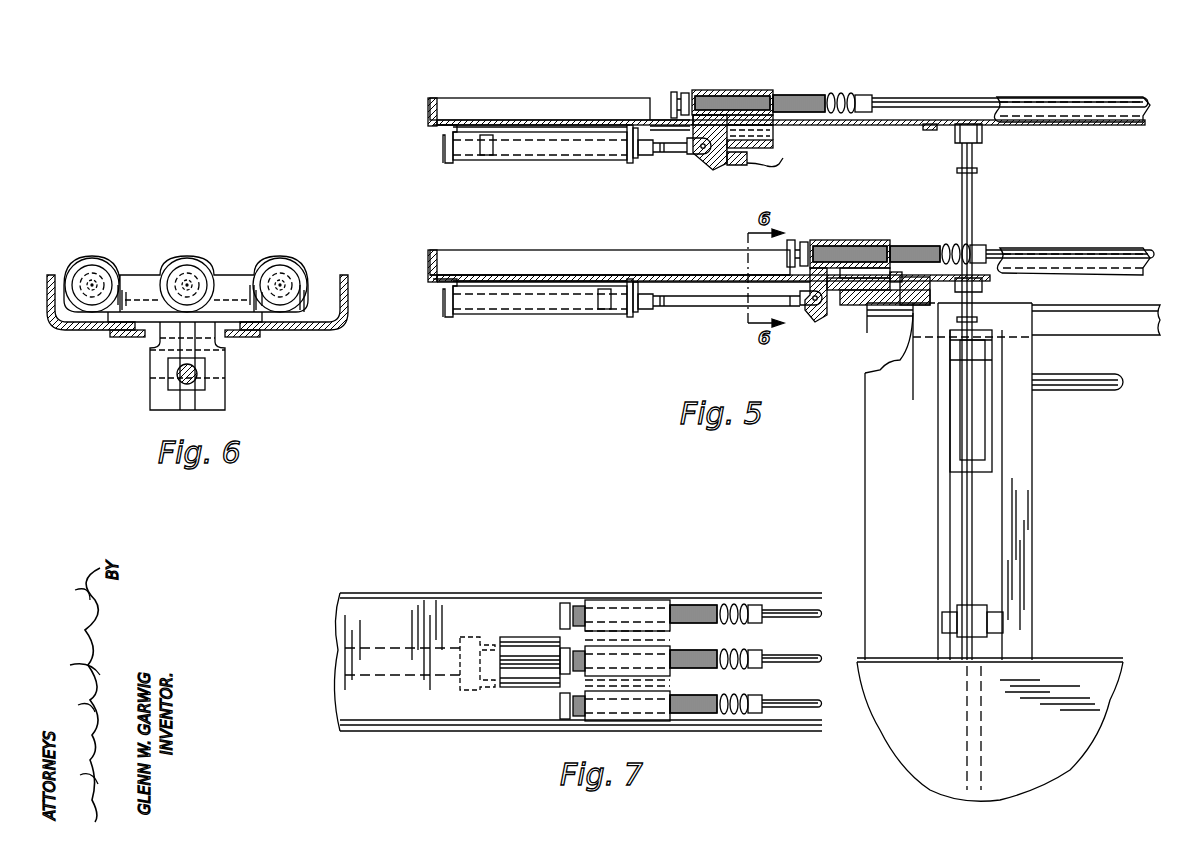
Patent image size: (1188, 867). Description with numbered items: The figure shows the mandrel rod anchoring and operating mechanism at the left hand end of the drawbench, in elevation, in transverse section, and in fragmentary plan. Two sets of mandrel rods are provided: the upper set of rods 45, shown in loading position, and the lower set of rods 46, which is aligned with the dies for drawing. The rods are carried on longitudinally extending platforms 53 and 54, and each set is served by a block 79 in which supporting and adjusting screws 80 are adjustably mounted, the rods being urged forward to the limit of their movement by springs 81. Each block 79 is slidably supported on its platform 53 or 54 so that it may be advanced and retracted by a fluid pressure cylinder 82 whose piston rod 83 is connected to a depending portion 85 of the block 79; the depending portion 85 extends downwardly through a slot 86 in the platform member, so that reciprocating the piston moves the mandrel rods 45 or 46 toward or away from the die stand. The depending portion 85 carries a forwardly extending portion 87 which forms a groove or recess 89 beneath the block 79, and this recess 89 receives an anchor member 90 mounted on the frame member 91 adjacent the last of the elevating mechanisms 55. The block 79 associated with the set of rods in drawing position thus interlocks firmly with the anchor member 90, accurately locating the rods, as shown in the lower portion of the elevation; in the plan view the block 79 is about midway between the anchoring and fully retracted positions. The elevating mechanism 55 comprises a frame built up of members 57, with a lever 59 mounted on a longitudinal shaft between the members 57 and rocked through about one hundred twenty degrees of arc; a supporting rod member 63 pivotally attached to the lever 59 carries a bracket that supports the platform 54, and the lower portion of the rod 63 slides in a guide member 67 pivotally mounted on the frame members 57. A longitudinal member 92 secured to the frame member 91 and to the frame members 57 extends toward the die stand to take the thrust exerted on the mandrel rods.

In FIG. 5, the upper set of mandrel rods 45 is at (975, 96).
In FIG. 7, the upper set of mandrel rods 45 is at (810, 620).
In FIG. 5, the lower set of mandrel rods 46 is at (1158, 236).
In FIG. 5, the platform 53 is at (1068, 121).
In FIG. 5, the platform 54 is at (1130, 276).
In FIG. 6, the platform 54 is at (62, 330).
In FIG. 7, the platform 54 is at (458, 732).
In FIG. 5, the elevating mechanism 55 is at (1044, 446).
In FIG. 5, the frame member 57 is at (1013, 494).
In FIG. 5, the lever 59 is at (990, 416).
In FIG. 5, the supporting rod member 63 is at (972, 530).
In FIG. 5, the guide member 67 is at (990, 620).
In FIG. 5, the block 79 is at (735, 92).
In FIG. 6, the block 79 is at (204, 262).
In FIG. 7, the block 79 is at (650, 580).
In FIG. 5, the supporting and adjusting screw 80 is at (790, 100).
In FIG. 6, the supporting and adjusting screw 80 is at (94, 282).
In FIG. 7, the supporting and adjusting screw 80 is at (690, 655).
In FIG. 5, the spring 81 is at (840, 94).
In FIG. 7, the spring 81 is at (736, 606).
In FIG. 5, the fluid pressure cylinder 82 is at (552, 160).
In FIG. 7, the fluid pressure cylinder 82 is at (372, 676).
In FIG. 5, the piston rod 83 is at (672, 150).
In FIG. 6, the piston rod 83 is at (200, 382).
In FIG. 7, the piston rod 83 is at (538, 668).
In FIG. 5, the depending portion 85 is at (708, 163).
In FIG. 6, the depending portion 85 is at (208, 400).
In FIG. 5, the slot 86 is at (650, 118).
In FIG. 7, the slot 86 is at (540, 623).
In FIG. 5, the forwardly extending portion 87 is at (840, 344).
In FIG. 5, the recess 89 is at (748, 140).
In FIG. 5, the anchor member 90 is at (862, 318).
In FIG. 5, the frame member 91 is at (875, 432).
In FIG. 5, the tube 92 is at (1096, 320).